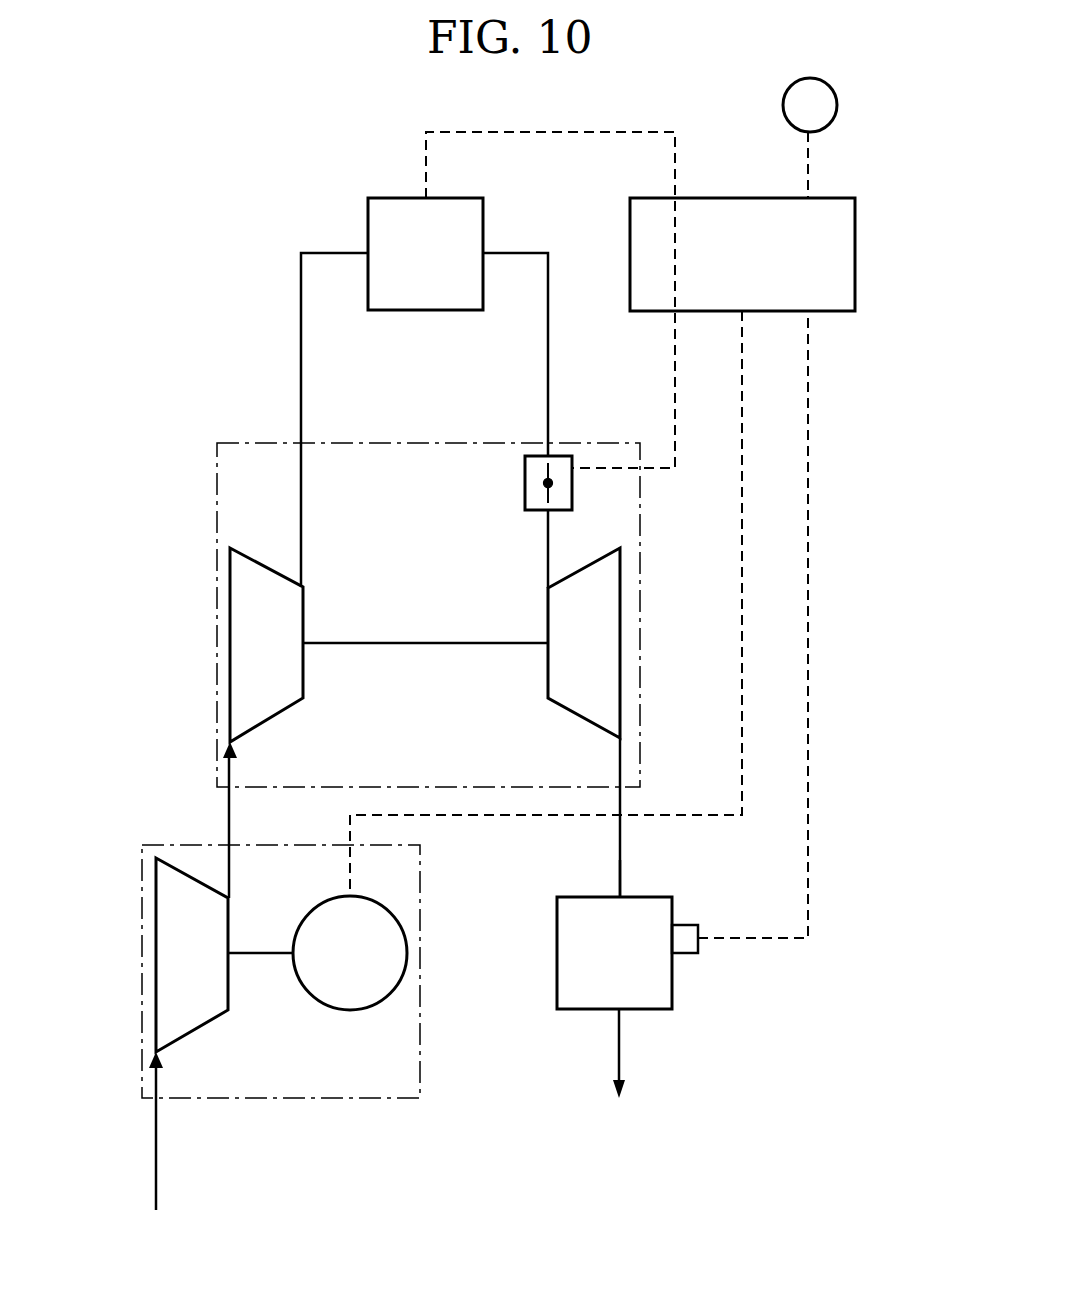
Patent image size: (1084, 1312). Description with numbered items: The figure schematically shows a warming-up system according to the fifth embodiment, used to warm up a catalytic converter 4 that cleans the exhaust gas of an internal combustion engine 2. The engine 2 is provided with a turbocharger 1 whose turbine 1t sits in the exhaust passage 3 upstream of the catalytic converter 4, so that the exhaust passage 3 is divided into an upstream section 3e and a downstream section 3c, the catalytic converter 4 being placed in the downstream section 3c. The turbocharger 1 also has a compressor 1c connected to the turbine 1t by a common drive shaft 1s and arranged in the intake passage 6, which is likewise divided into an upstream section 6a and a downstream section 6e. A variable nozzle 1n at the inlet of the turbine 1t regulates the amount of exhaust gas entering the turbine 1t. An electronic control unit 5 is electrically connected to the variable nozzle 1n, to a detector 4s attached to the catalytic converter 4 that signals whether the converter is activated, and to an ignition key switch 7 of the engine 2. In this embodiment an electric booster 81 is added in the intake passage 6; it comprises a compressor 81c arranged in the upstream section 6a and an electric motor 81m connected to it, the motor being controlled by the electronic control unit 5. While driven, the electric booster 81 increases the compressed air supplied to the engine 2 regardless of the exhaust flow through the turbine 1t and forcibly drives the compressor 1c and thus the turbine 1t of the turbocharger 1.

The turbocharger 1 is at (217, 463).
The compressor 1c is at (268, 560).
The variable nozzle 1n is at (525, 503).
The common drive shaft 1s is at (395, 645).
The turbine 1t is at (600, 558).
The internal combustion engine 2 is at (392, 198).
The exhaust passage 3 is at (625, 852).
The downstream section 3c is at (617, 870).
The upstream section 3e is at (548, 340).
The catalytic converter 4 is at (557, 916).
The detector 4s is at (688, 946).
The electronic control unit 5 is at (855, 218).
The intake passage 6 is at (148, 1148).
The upstream section 6a is at (156, 1178).
The downstream section 6e is at (301, 342).
The ignition key switch 7 is at (820, 100).
The electric booster 81 is at (168, 843).
The compressor 81c is at (200, 1030).
The electric motor 81m is at (348, 1010).